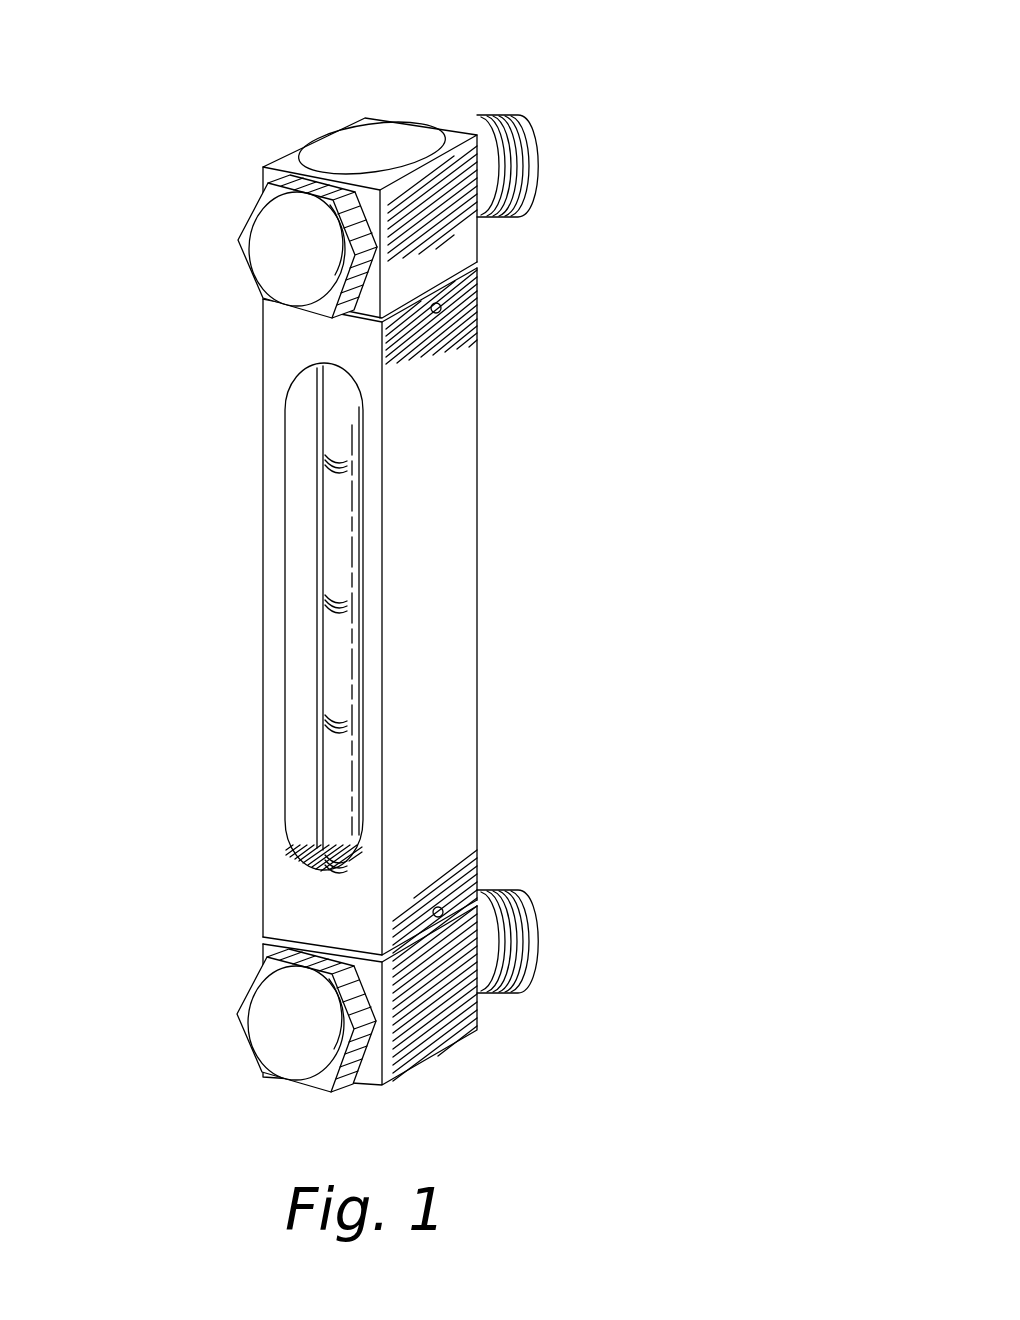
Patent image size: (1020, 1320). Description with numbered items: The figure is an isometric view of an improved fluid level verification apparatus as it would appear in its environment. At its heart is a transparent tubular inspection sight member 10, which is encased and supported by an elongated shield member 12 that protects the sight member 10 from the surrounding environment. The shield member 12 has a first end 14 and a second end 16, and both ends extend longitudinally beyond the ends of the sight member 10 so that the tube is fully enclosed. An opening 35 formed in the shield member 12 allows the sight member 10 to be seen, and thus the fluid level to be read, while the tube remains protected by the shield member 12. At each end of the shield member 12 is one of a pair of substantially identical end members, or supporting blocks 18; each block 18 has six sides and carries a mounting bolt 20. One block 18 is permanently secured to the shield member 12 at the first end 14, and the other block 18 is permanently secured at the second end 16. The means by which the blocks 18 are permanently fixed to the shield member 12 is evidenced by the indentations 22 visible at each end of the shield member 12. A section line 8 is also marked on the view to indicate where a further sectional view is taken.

The section line 8- 8 is at (374, 148).
The transparent tubular inspection sight member 10 is at (330, 594).
The shield member 12 is at (437, 623).
The first end 14 is at (283, 352).
The second end 16 is at (292, 905).
The supporting block 18 is at (330, 148).
The mounting bolt 20 is at (283, 261).
The indentation 22 is at (442, 309).
The opening 35 is at (297, 740).